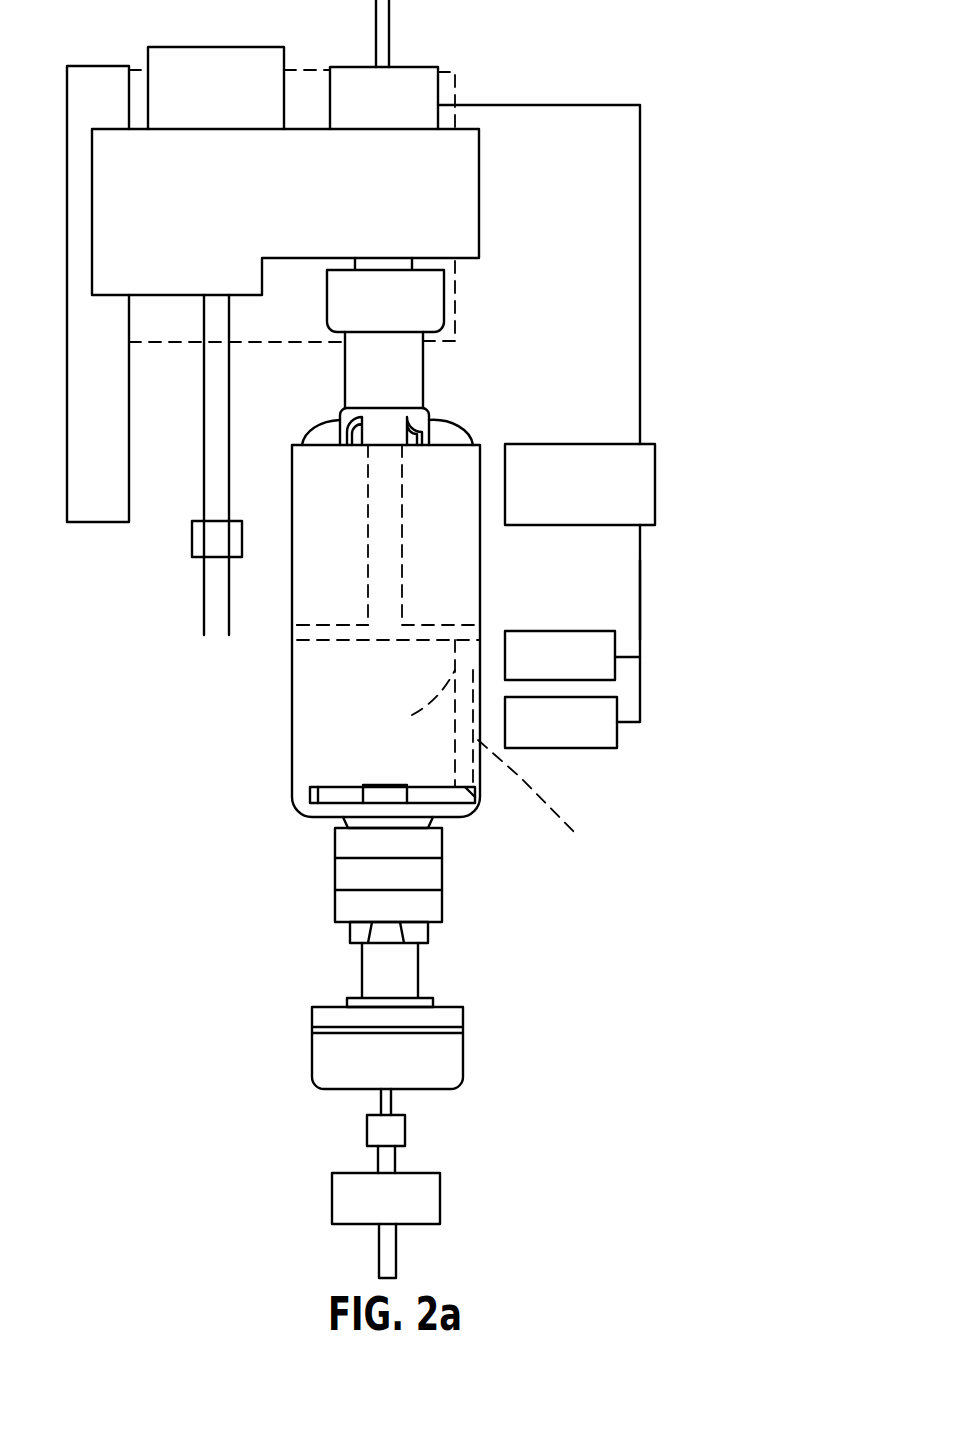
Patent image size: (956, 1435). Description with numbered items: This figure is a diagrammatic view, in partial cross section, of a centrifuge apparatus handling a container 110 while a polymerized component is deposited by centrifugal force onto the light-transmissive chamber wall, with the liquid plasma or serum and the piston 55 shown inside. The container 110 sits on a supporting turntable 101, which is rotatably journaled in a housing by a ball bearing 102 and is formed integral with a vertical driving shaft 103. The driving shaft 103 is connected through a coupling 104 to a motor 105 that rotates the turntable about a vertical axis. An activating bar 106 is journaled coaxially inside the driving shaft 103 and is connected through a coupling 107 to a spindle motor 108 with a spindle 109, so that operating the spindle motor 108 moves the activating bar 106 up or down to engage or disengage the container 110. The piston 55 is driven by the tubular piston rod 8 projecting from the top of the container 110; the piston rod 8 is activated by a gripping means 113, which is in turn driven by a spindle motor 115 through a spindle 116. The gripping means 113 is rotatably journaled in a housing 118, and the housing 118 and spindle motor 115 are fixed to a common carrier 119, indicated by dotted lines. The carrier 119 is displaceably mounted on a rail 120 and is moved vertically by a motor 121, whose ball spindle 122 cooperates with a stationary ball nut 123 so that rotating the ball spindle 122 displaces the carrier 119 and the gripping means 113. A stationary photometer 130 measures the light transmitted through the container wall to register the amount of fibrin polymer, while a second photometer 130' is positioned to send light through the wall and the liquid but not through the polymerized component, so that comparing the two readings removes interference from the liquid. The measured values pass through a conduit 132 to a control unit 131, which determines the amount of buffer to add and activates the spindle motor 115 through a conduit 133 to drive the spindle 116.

The tubular piston rod 8 is at (413, 378).
The piston 55 is at (320, 632).
The supporting turntable 101 is at (478, 806).
The ball bearing 102 is at (433, 904).
The vertical driving shaft 103 is at (400, 823).
The coupling 104 is at (400, 967).
The motor 105 is at (450, 1050).
The activating bar 106 is at (391, 1100).
The coupling 107 is at (398, 1133).
The spindle motor 108 is at (428, 1198).
The spindle 109 is at (388, 1161).
The container 110 is at (481, 598).
The gripping means 113 is at (428, 302).
The spindle motor 115 is at (430, 95).
The spindle 116 is at (384, 42).
The housing 118 is at (458, 199).
The carrier 119 is at (307, 70).
The rail 120 is at (98, 497).
The motor 121 is at (218, 65).
The ball spindle 122 is at (212, 488).
The ball nut 123 is at (200, 537).
The photometer 130 is at (586, 739).
The second photometer 130' is at (611, 664).
The control unit 131 is at (633, 490).
The conduit 132 is at (642, 600).
The conduit 133 is at (637, 155).